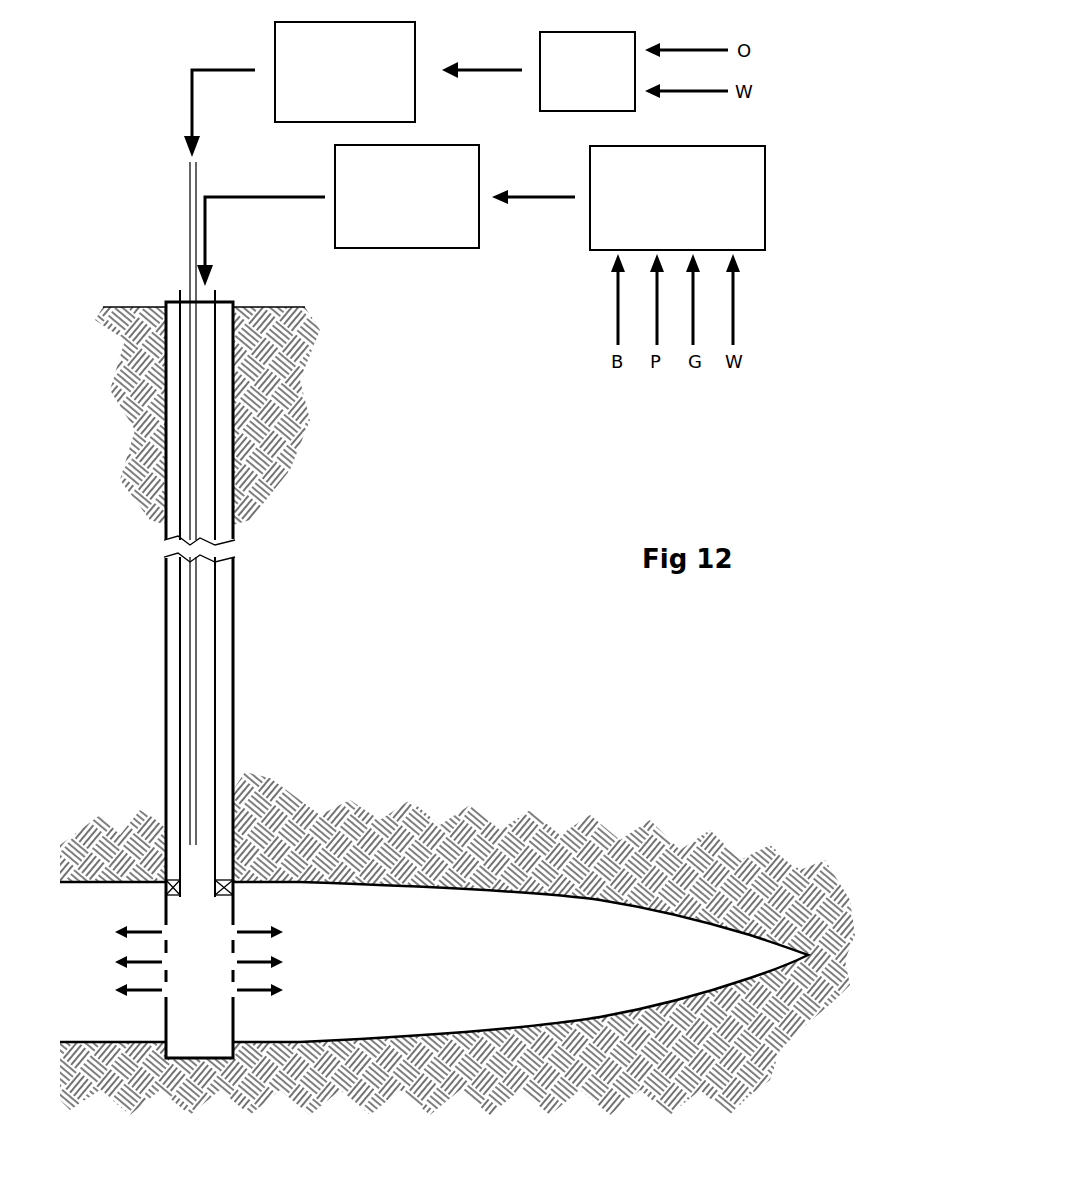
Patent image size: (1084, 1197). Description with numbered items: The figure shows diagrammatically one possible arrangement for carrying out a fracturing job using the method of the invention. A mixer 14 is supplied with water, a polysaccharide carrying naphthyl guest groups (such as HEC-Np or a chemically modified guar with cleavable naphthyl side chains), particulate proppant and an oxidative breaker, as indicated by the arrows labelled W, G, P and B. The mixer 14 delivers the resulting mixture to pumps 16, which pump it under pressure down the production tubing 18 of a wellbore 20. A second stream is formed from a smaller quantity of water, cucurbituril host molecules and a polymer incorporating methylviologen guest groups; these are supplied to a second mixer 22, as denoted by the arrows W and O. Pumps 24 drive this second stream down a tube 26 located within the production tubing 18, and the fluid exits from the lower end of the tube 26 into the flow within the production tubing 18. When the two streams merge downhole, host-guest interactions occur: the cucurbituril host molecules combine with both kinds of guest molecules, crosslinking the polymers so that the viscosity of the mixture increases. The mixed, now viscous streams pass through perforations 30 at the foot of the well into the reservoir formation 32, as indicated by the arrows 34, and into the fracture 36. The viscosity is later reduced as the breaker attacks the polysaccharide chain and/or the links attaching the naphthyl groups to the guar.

The mixer 14 is at (677, 198).
The pumps 16 is at (407, 196).
The production tubing 18 is at (217, 520).
The wellbore 20 is at (243, 649).
The second mixer 22 is at (587, 71).
The pumps 24 is at (345, 72).
The tube 26 is at (189, 214).
The perforations 30 is at (237, 923).
The reservoir formation 32 is at (623, 858).
The arrows 34 is at (236, 963).
The fracture 36 is at (680, 962).